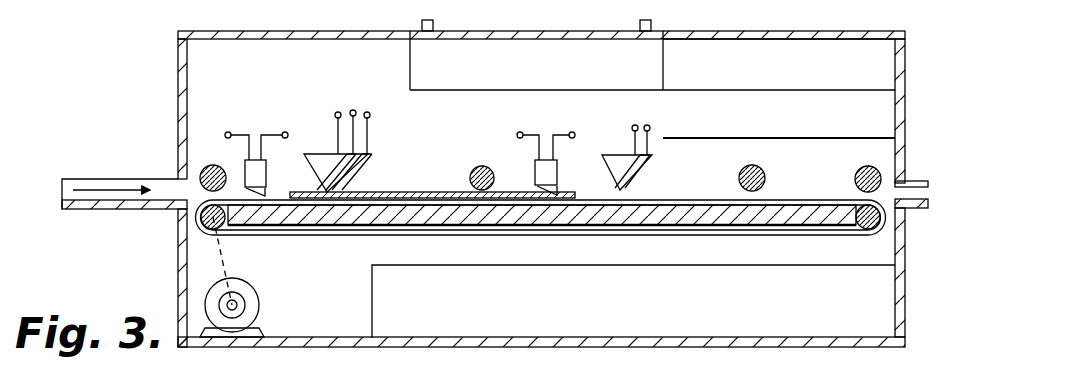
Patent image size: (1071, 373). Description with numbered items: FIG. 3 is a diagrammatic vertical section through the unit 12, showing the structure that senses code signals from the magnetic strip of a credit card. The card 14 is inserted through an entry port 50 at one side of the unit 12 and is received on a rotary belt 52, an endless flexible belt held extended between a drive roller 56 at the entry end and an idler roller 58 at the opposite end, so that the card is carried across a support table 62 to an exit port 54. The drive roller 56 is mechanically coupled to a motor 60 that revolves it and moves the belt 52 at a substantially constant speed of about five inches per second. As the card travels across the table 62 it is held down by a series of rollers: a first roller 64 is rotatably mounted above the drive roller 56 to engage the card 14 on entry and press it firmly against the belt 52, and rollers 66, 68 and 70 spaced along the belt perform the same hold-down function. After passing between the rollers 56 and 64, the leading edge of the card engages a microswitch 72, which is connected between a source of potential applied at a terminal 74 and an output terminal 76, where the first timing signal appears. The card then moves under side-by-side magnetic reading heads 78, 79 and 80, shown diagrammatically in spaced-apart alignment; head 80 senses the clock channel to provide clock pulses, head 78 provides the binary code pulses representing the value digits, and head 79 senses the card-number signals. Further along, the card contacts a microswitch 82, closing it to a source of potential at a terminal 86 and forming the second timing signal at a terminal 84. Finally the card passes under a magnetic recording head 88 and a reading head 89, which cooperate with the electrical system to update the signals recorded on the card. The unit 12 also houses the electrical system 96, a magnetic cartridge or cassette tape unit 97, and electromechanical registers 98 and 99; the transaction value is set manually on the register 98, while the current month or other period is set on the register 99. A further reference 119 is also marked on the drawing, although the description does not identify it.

The unit 12 is at (150, 24).
The card 14 is at (452, 187).
The entry port 50 is at (173, 184).
The rotary belt 52 is at (336, 232).
The exit port 54 is at (912, 192).
The drive roller 56 is at (228, 222).
The idler roller 58 is at (860, 228).
The motor 60 is at (262, 305).
The support table 62 is at (420, 240).
The first roller 64 is at (219, 167).
The roller 66 is at (492, 170).
The roller 68 is at (748, 166).
The roller 70 is at (860, 168).
The microswitch 72 is at (256, 166).
The terminal 74 is at (228, 132).
The output terminal 76 is at (284, 139).
The magnetic reading head 78 is at (370, 166).
The magnetic reading head 79 is at (362, 158).
The magnetic reading head 80 is at (347, 180).
The microswitch 82 is at (552, 176).
The terminal 84 is at (572, 132).
The terminal 86 is at (520, 132).
The magnetic recording head 88 is at (650, 166).
The reading head 89 is at (630, 186).
The electrical system 96 is at (633, 301).
The magnetic cartridge or cassette tape unit 97 is at (779, 64).
The electromechanical register 98 is at (536, 55).
The electromechanical register 99 is at (779, 118).
The cartridge 119 is at (285, 367).